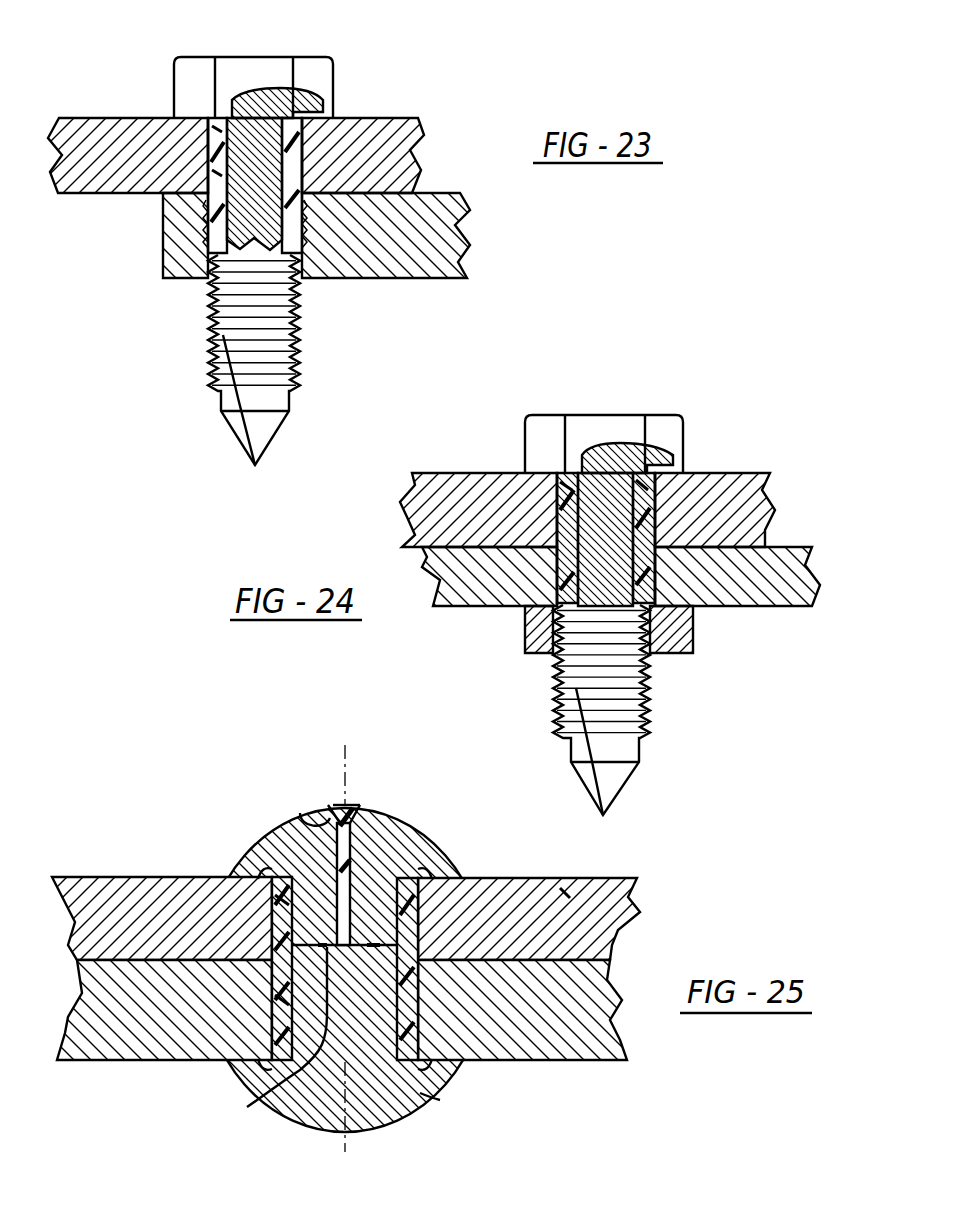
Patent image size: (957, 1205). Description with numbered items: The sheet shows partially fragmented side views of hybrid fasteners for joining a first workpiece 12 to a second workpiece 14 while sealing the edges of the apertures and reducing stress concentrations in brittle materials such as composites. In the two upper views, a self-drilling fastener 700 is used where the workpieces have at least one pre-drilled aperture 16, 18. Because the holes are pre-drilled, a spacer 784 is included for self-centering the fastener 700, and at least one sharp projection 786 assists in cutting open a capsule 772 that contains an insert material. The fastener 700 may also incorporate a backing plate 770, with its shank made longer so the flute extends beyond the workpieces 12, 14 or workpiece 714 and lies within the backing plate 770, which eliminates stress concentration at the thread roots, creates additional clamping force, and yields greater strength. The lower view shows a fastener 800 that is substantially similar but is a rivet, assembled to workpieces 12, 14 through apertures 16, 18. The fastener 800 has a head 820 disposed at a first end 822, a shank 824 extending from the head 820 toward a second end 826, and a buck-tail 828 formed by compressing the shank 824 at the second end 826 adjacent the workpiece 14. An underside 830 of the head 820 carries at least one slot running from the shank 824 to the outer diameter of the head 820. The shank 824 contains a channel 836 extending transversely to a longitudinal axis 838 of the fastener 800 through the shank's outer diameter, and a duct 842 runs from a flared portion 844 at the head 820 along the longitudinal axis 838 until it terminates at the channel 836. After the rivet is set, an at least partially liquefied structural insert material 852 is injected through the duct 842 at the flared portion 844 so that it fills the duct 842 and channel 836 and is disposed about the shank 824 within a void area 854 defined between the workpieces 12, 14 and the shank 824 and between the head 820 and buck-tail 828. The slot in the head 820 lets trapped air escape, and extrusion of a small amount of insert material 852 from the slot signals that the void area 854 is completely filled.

In FIG. 23, the fastener 700 is at (367, 56).
In FIG. 24, the fastener 700 is at (556, 400).
In FIG. 23, the first workpiece 12 is at (395, 138).
In FIG. 24, the first workpiece 12 is at (740, 511).
In FIG. 25, the first workpiece 12 is at (590, 935).
In FIG. 24, the second workpiece 14 is at (765, 590).
In FIG. 25, the second workpiece 14 is at (587, 1027).
In FIG. 23, the workpiece 714 is at (443, 248).
In FIG. 23, the aperture 16 is at (302, 154).
In FIG. 24, the aperture 16 is at (672, 496).
In FIG. 25, the aperture 16 is at (420, 915).
In FIG. 24, the aperture 18 is at (660, 568).
In FIG. 25, the aperture 18 is at (420, 1020).
In FIG. 24, the backing plate 770 is at (677, 643).
In FIG. 23, the capsule 772 is at (304, 228).
In FIG. 24, the capsule 772 is at (563, 567).
In FIG. 23, the spacer 784 is at (210, 120).
In FIG. 24, the spacer 784 is at (556, 488).
In FIG. 23, the sharp projection 786 is at (213, 130).
In FIG. 24, the sharp projection 786 is at (565, 475).
In FIG. 25, the fastener 800 is at (225, 747).
In FIG. 25, the head 820 is at (286, 838).
In FIG. 25, the first end 822 is at (221, 861).
In FIG. 25, the shank 824 is at (288, 999).
In FIG. 25, the second end 826 is at (222, 1096).
In FIG. 25, the buck-tail 828 is at (440, 1100).
In FIG. 25, the underside 830 is at (470, 880).
In FIG. 25, the channel 836 is at (247, 1107).
In FIG. 25, the longitudinal axis 838 is at (345, 1148).
In FIG. 25, the duct 842 is at (360, 805).
In FIG. 25, the flared portion 844 is at (300, 813).
In FIG. 25, the structural insert material 852 is at (420, 947).
In FIG. 25, the void area 854 is at (277, 901).